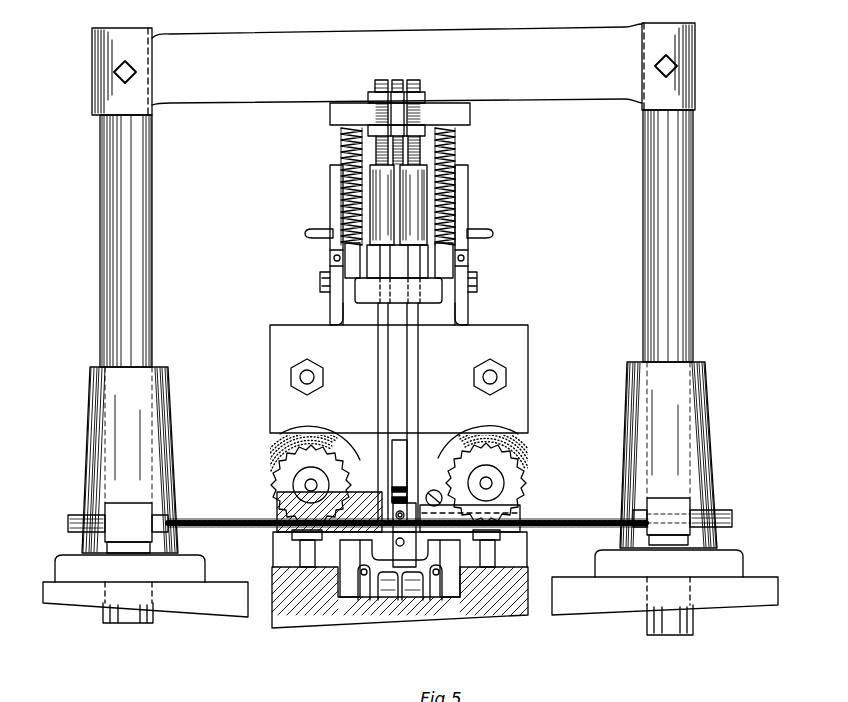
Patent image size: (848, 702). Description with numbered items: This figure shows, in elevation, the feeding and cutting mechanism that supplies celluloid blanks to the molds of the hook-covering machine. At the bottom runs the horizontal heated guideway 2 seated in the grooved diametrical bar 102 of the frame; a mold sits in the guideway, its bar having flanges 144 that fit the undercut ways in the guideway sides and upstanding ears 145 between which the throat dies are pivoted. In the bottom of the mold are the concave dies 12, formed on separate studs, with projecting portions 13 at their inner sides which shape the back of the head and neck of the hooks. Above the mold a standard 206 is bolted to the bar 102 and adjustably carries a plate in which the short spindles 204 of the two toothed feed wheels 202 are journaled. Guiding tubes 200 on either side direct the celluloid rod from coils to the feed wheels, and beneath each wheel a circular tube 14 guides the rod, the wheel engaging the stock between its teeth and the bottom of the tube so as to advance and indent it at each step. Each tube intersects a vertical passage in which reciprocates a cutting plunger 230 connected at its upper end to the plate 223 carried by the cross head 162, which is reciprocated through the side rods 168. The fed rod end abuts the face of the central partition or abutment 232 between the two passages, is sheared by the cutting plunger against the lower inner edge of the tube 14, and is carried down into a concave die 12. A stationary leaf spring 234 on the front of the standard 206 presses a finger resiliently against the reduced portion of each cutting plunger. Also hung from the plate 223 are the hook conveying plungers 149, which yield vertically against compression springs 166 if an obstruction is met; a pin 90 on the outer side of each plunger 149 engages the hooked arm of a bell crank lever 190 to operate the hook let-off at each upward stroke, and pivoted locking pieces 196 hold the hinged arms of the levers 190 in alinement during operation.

The cross head 162 is at (615, 55).
The side rods 168 is at (140, 250).
The diametrical bar 102 is at (225, 607).
The guiding tubes 200 is at (80, 522).
The tube 14 is at (285, 520).
The plate 223 is at (458, 115).
The springs 166 is at (455, 148).
The bell crank lever 190 is at (462, 222).
The pivoted locking pieces 196 is at (470, 247).
The pin 90 is at (465, 268).
The hook conveying plungers 149 is at (353, 262).
The cutting plunger 230 is at (412, 340).
The central partition or abutment 232 is at (400, 373).
The standard 206 is at (505, 398).
The spindles 204 is at (288, 483).
The toothed feed wheels 202 is at (310, 485).
The flanges 144 is at (353, 600).
The guideway 2 is at (460, 582).
The ears 145 is at (433, 583).
The projecting portions 13 is at (400, 598).
The dies 12 is at (412, 585).
The stationary leaf spring 234 is at (397, 533).